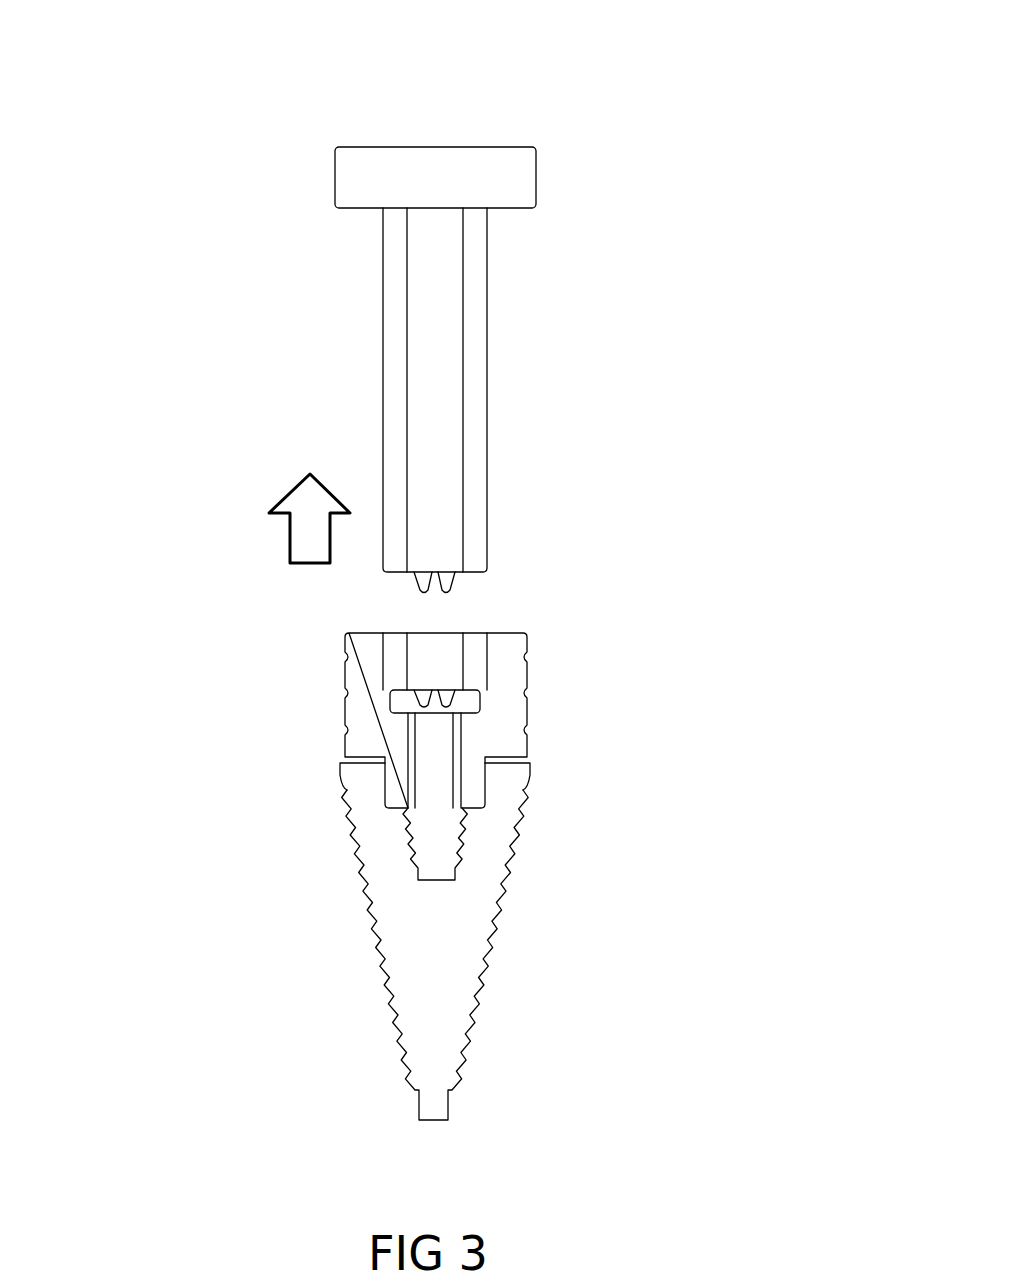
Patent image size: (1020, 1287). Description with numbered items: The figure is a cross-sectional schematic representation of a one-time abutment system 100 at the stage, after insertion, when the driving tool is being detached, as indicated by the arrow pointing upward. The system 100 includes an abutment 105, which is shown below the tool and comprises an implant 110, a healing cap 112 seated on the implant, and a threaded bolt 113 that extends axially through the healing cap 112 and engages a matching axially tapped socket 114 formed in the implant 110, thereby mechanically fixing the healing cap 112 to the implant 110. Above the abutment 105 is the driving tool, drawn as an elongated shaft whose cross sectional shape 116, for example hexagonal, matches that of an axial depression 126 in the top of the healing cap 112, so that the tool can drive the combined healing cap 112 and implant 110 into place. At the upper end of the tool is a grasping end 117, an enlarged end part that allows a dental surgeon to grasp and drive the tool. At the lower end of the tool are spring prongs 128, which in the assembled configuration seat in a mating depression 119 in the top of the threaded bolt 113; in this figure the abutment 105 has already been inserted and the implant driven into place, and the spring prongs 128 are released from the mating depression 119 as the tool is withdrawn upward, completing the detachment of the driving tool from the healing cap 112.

The one-time abutment system 100 is at (720, 70).
The abutment 105 is at (617, 529).
The implant 110 is at (497, 908).
The healing cap 112 is at (512, 662).
The threaded bolt 113 is at (415, 782).
The axially tapped socket 114 is at (458, 847).
The cross sectional shape 116 is at (386, 360).
The grasping end 117 is at (335, 177).
The mating depression 119 is at (415, 700).
The axial depression 126 is at (473, 635).
The spring prongs 128 is at (414, 585).